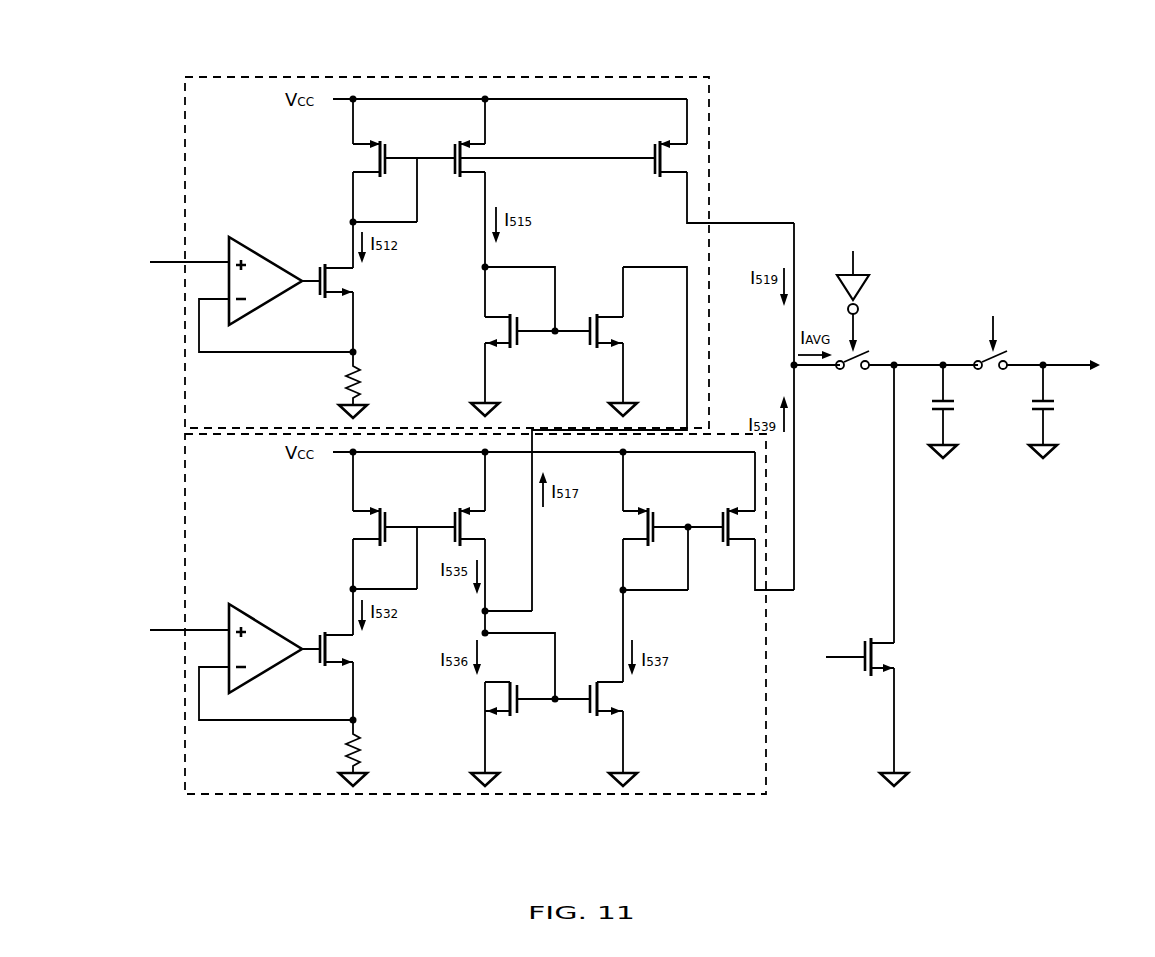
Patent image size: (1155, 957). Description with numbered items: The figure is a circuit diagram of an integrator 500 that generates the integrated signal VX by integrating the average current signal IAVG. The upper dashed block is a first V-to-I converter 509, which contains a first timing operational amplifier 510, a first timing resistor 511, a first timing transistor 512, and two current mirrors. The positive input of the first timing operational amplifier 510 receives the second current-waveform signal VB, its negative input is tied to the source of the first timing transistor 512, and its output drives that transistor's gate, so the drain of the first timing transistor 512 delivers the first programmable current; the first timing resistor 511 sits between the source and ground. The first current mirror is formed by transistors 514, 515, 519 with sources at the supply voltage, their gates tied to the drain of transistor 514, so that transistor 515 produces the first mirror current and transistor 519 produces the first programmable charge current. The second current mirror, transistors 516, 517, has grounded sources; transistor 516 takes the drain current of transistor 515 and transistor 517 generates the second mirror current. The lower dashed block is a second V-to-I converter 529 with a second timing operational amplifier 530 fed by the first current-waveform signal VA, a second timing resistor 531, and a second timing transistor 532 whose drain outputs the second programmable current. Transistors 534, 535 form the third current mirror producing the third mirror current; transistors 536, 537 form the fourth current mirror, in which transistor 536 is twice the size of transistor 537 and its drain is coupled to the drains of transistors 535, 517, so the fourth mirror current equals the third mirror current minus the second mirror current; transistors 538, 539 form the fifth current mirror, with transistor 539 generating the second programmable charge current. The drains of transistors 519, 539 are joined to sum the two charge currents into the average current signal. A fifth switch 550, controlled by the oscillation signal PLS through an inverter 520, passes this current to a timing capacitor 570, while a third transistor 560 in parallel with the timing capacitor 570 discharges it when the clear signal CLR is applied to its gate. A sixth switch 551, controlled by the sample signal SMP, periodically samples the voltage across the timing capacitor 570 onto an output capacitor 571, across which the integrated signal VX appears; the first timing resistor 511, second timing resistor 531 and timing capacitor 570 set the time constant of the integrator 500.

The integrator 500 is at (1058, 123).
The first V-to-I converter 509 is at (235, 76).
The first timing operational amplifier 510 is at (246, 237).
The first timing resistor 511 is at (348, 380).
The first timing transistor 512 is at (326, 300).
The transistor 514 is at (382, 143).
The transistor 515 is at (462, 178).
The transistor 516 is at (513, 350).
The transistor 517 is at (598, 350).
The transistor 519 is at (662, 178).
The inverter 520 is at (870, 284).
The second V-to-I converter 529 is at (727, 797).
The second timing operational amplifier 530 is at (246, 604).
The second timing resistor 531 is at (348, 748).
The second timing transistor 532 is at (326, 668).
The transistor 534 is at (382, 510).
The transistor 535 is at (458, 510).
The transistor 536 is at (513, 718).
The transistor 537 is at (598, 718).
The transistor 538 is at (650, 510).
The transistor 539 is at (730, 547).
The fifth switch 550 is at (843, 371).
The sixth switch 551 is at (982, 371).
The third transistor 560 is at (870, 678).
The timing capacitor 570 is at (938, 413).
The output capacitor 571 is at (1038, 413).